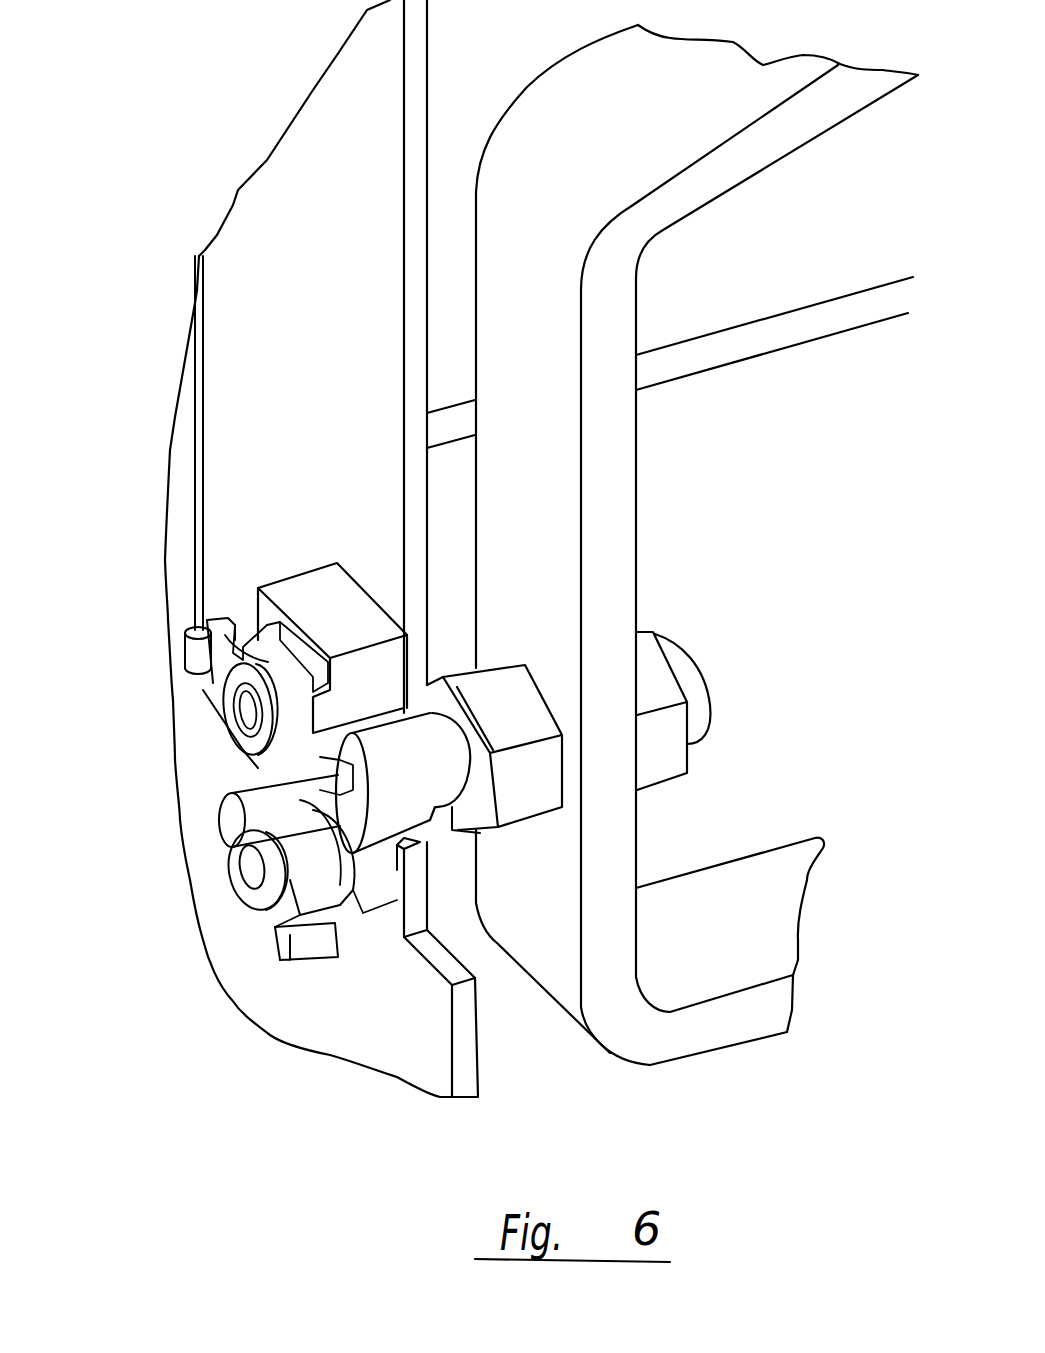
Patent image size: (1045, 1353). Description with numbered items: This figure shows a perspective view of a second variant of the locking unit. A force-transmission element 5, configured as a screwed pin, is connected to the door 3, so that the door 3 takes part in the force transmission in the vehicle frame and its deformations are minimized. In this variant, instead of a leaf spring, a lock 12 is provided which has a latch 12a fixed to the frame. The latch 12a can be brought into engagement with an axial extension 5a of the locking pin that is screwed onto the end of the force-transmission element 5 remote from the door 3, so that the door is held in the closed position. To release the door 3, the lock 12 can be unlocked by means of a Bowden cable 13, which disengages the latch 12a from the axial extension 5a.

The door 3 is at (767, 140).
The force-transmission element 5 is at (693, 686).
The axial extension 5a is at (263, 807).
The lock 12 is at (243, 938).
The latch 12a is at (300, 858).
The Bowden cable 13 is at (198, 420).